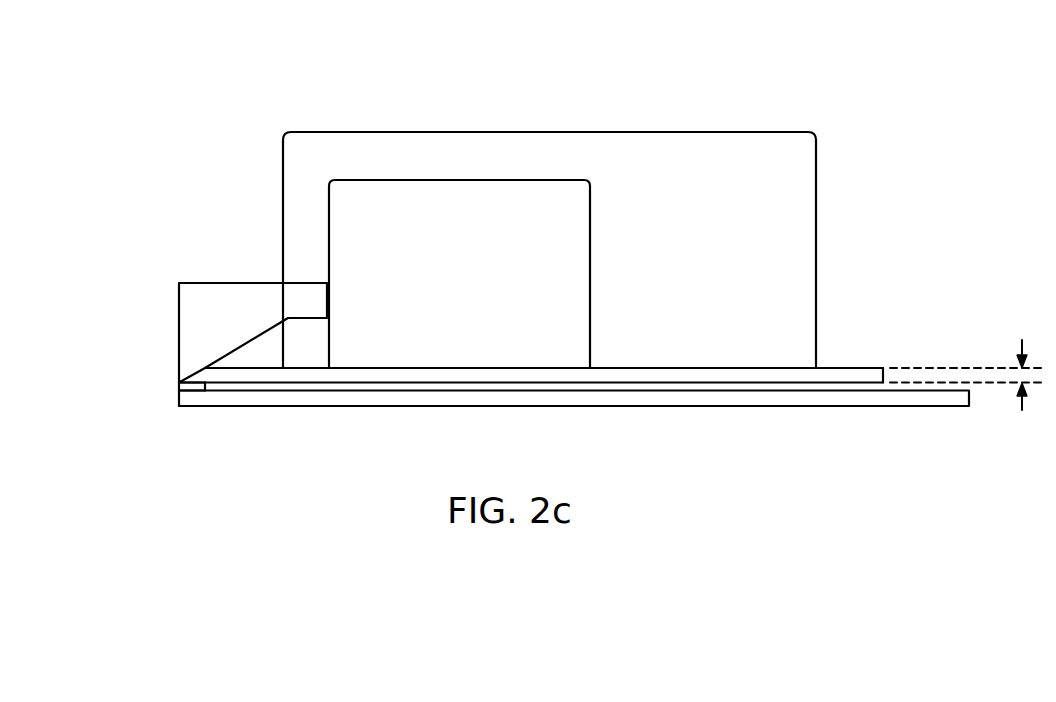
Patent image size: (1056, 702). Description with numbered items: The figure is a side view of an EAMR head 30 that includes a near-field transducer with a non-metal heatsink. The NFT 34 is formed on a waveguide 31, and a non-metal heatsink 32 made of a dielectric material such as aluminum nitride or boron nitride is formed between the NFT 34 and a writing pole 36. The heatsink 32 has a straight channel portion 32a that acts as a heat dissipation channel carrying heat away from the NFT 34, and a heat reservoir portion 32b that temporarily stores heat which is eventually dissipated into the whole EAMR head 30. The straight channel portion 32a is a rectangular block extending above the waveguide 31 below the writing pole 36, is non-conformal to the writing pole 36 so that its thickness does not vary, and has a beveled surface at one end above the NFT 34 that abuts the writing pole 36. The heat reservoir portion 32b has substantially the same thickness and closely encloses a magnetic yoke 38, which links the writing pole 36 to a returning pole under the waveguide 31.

The EAMR head 30 is at (906, 84).
The waveguide 31 is at (915, 400).
The non-metal heatsink 32 is at (297, 370).
The straight channel portion 32a is at (325, 375).
The heat reservoir portion 32b is at (873, 375).
The NFT 34 is at (177, 388).
The writing pole 36 is at (179, 324).
The magnetic yoke 38 is at (817, 208).